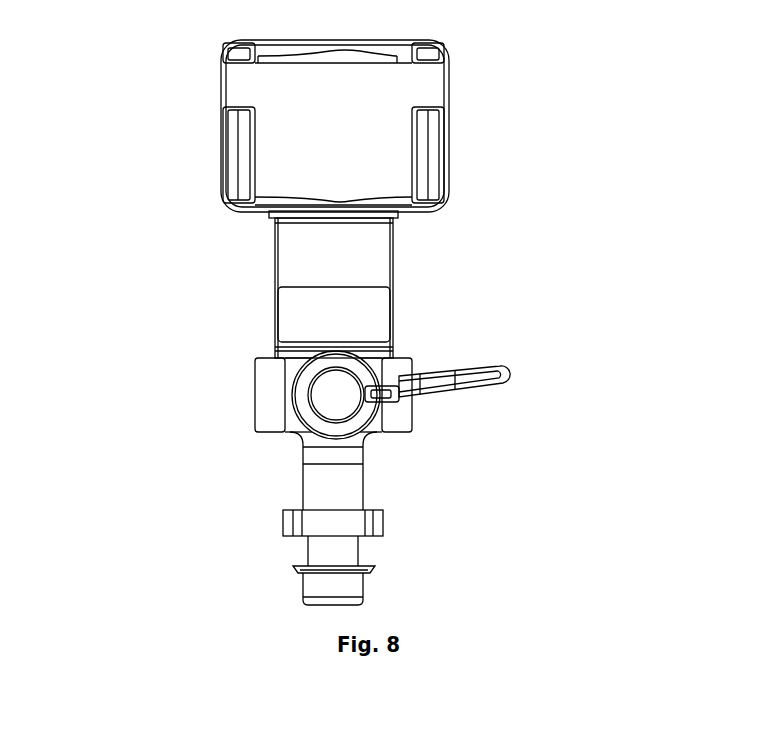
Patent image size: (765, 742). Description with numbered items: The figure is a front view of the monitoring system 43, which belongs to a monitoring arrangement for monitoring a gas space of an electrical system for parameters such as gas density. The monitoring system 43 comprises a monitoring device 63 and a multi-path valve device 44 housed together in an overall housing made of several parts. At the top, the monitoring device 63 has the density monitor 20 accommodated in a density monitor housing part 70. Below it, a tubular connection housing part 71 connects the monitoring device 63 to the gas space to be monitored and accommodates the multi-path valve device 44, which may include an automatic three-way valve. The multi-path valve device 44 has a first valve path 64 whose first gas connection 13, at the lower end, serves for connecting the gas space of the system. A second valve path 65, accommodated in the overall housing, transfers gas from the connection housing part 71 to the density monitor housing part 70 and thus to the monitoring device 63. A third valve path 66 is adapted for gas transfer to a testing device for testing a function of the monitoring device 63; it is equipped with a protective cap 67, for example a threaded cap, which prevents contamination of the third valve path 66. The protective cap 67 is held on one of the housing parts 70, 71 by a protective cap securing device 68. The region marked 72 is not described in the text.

The first gas connection 13 is at (307, 606).
The density monitor 20 is at (315, 105).
The monitoring system 43 is at (602, 202).
The multi-path valve device 44 is at (227, 389).
The monitoring device 63 is at (285, 138).
The first valve path 64 is at (372, 468).
The second valve path 65 is at (377, 270).
The third valve path 66 is at (335, 395).
The protective cap 67 is at (350, 393).
The protective cap securing device 68 is at (490, 370).
The density monitor housing part 70 is at (392, 90).
The connection housing part 71 is at (302, 268).
The lower neck 72 is at (242, 438).